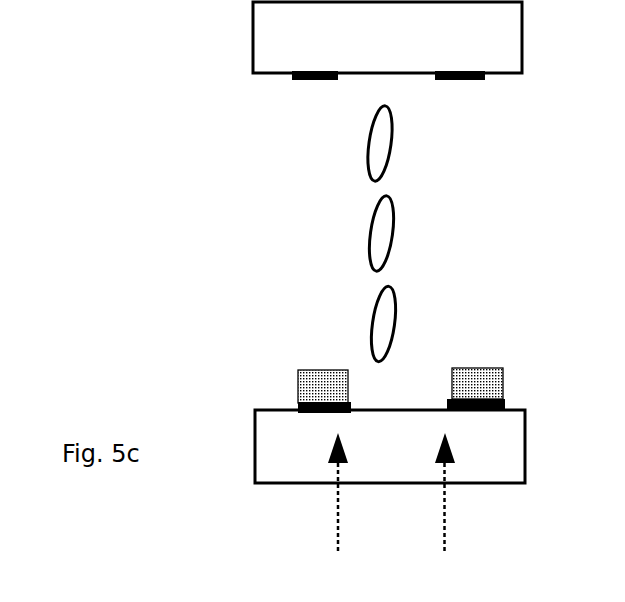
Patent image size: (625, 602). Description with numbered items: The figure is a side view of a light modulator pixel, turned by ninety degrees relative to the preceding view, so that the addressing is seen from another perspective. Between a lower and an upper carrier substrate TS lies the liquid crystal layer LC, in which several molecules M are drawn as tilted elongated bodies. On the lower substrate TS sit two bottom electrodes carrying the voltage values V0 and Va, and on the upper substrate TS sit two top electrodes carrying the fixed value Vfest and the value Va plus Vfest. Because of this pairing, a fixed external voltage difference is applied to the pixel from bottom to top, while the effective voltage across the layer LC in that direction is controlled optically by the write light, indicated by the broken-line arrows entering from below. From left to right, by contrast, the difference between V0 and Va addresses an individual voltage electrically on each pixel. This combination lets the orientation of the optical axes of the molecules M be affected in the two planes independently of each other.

The carrier substrate TS is at (389, 242).
The liquid crystal layer LC is at (381, 220).
The molecules M is at (382, 327).
The voltage value of bottom electrode V0 is at (324, 445).
The voltage value of bottom electrode Va is at (470, 444).
The fixed voltage value of top electrode Vfest is at (312, 97).